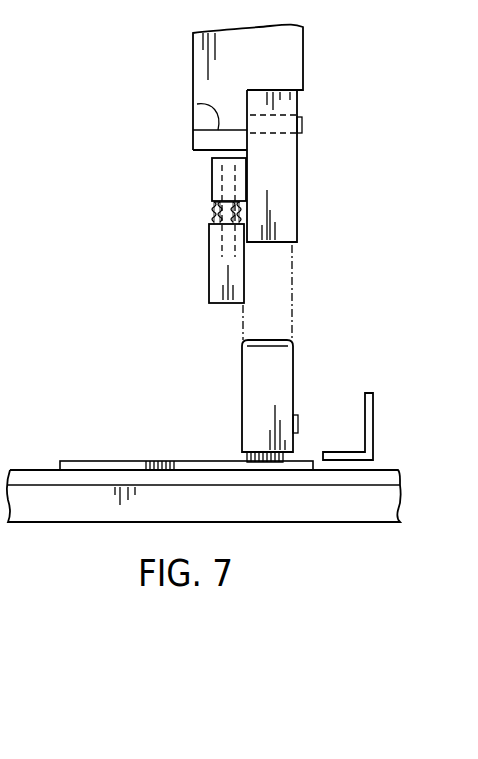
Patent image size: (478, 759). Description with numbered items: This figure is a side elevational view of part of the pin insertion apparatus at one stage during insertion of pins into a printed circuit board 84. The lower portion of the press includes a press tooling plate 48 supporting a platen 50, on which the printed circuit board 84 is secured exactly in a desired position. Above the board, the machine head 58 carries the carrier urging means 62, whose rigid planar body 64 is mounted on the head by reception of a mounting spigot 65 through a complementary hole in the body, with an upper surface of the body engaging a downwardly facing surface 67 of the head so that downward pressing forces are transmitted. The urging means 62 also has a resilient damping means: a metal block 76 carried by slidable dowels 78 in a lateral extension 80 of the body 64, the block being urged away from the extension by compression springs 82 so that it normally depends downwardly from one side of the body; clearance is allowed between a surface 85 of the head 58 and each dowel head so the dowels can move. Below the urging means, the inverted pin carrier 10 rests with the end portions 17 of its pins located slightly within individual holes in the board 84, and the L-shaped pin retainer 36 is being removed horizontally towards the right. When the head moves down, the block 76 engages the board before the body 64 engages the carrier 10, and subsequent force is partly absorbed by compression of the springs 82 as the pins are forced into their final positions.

The machine head 58 is at (200, 63).
The surface of the head 85 is at (197, 104).
The lateral extension 80 is at (212, 185).
The compression springs 82 is at (216, 208).
The slidable dowels 78 is at (215, 217).
The metal block 76 is at (210, 270).
The downwardly facing surface 67 is at (275, 90).
The mounting spigot 65 is at (302, 128).
The carrier urging means 62 is at (305, 172).
The rigid planar body 64 is at (297, 213).
The pin carrier 10 is at (302, 378).
The end portions 17 is at (233, 455).
The printed circuit board 84 is at (99, 465).
The pin retainer 36 is at (371, 404).
The platen 50 is at (378, 472).
The press tooling plate 48 is at (386, 508).